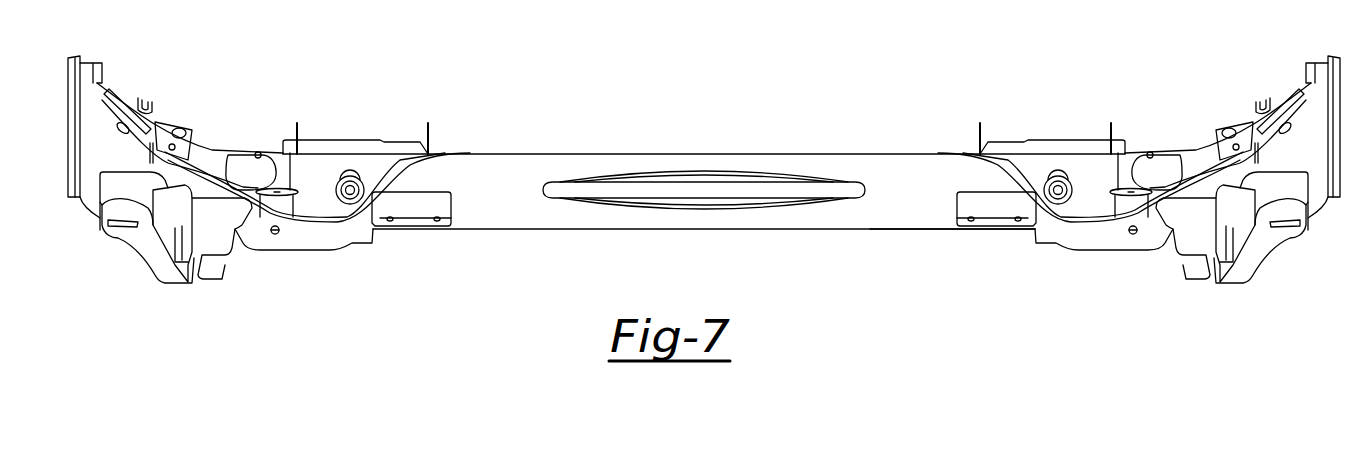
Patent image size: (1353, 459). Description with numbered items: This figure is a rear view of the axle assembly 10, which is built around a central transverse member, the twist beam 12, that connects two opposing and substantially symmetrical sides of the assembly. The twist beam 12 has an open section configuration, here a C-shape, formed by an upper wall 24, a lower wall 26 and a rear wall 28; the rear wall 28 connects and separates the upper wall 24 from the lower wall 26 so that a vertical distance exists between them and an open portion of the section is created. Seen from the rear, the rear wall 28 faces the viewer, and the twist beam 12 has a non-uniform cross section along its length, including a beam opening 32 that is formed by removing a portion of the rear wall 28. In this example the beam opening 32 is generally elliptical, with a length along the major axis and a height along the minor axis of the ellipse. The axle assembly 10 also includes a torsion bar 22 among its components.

The axle assembly 10 is at (266, 47).
The twist beam 12 is at (529, 153).
The torsion bar 22 is at (738, 190).
The upper wall 24 is at (763, 153).
The lower wall 26 is at (757, 230).
The rear wall 28 is at (886, 194).
The beam opening 32 is at (615, 203).